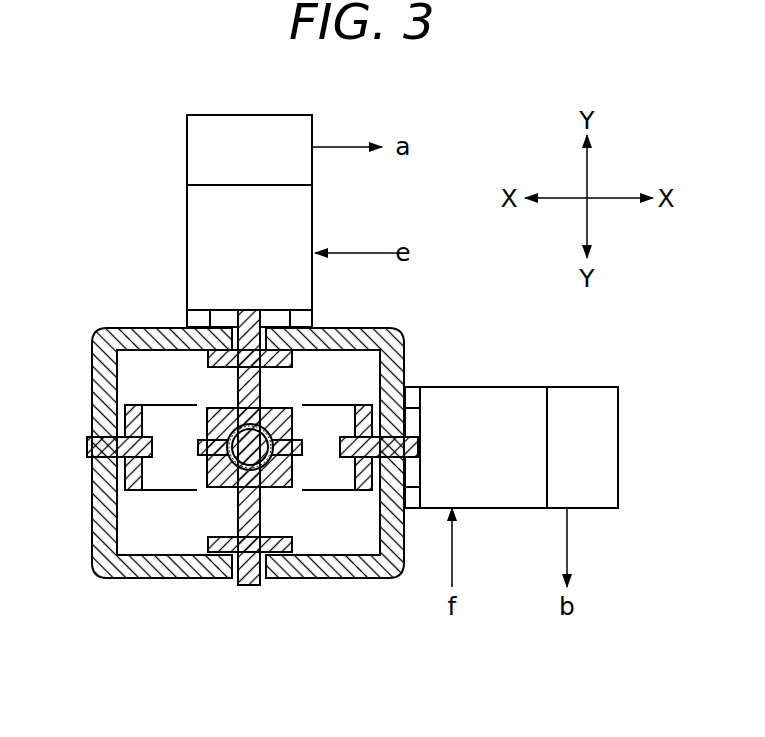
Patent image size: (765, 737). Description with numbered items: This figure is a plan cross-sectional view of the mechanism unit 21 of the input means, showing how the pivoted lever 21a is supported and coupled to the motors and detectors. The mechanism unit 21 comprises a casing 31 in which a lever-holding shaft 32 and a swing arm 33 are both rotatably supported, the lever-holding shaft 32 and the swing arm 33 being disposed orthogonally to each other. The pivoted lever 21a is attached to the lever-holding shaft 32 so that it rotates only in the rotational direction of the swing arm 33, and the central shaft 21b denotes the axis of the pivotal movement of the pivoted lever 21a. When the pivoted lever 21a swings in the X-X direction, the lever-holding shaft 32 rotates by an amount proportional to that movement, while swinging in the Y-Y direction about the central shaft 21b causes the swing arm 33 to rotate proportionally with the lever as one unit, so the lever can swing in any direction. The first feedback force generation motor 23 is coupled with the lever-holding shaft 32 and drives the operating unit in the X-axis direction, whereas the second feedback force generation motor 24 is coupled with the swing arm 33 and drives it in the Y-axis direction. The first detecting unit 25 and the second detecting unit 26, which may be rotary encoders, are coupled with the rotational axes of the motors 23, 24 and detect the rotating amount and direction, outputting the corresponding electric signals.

The mechanism unit 21 is at (323, 402).
The pivoted lever 21a is at (248, 442).
The central shaft 21b is at (302, 457).
The first feedback force generation motor 23 is at (195, 218).
The second feedback force generation motor 24 is at (500, 395).
The first detecting unit 25 is at (195, 142).
The second detecting unit 26 is at (590, 395).
The casing 31 is at (92, 362).
The lever-holding shaft 32 is at (235, 530).
The swing arm 33 is at (162, 492).